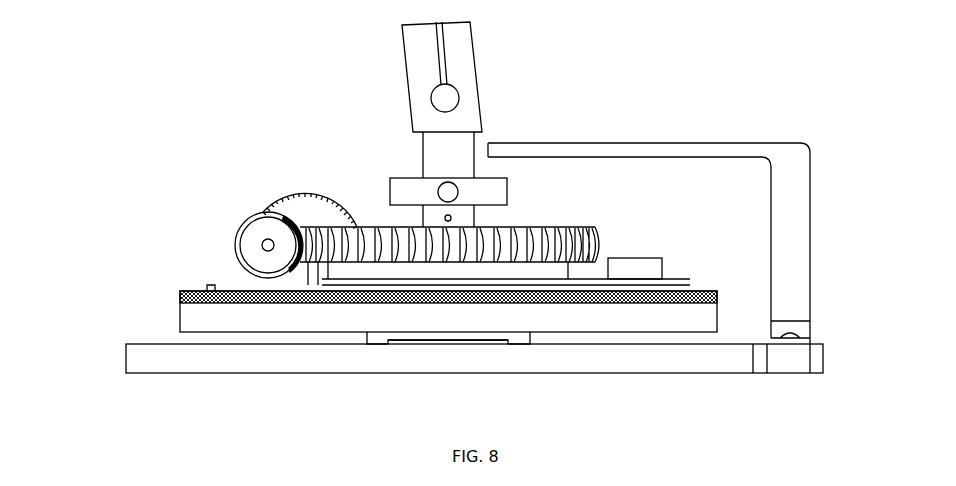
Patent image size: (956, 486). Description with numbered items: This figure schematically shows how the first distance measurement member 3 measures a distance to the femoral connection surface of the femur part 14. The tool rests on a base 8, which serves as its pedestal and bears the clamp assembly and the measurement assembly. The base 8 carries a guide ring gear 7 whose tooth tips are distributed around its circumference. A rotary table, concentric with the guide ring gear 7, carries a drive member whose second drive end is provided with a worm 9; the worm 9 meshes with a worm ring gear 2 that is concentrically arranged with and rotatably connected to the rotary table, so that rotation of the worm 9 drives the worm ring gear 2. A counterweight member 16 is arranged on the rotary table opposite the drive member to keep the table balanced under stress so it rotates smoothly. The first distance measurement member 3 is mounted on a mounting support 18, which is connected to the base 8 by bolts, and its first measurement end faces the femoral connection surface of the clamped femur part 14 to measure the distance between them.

The worm ring gear 2 is at (590, 264).
The first distance measurement member 3 is at (497, 157).
The guide ring gear 7 is at (179, 312).
The base 8 is at (124, 352).
The worm 9 is at (231, 233).
The femur part 14 is at (480, 100).
The counterweight member 16 is at (666, 276).
The mounting support 18 is at (700, 145).